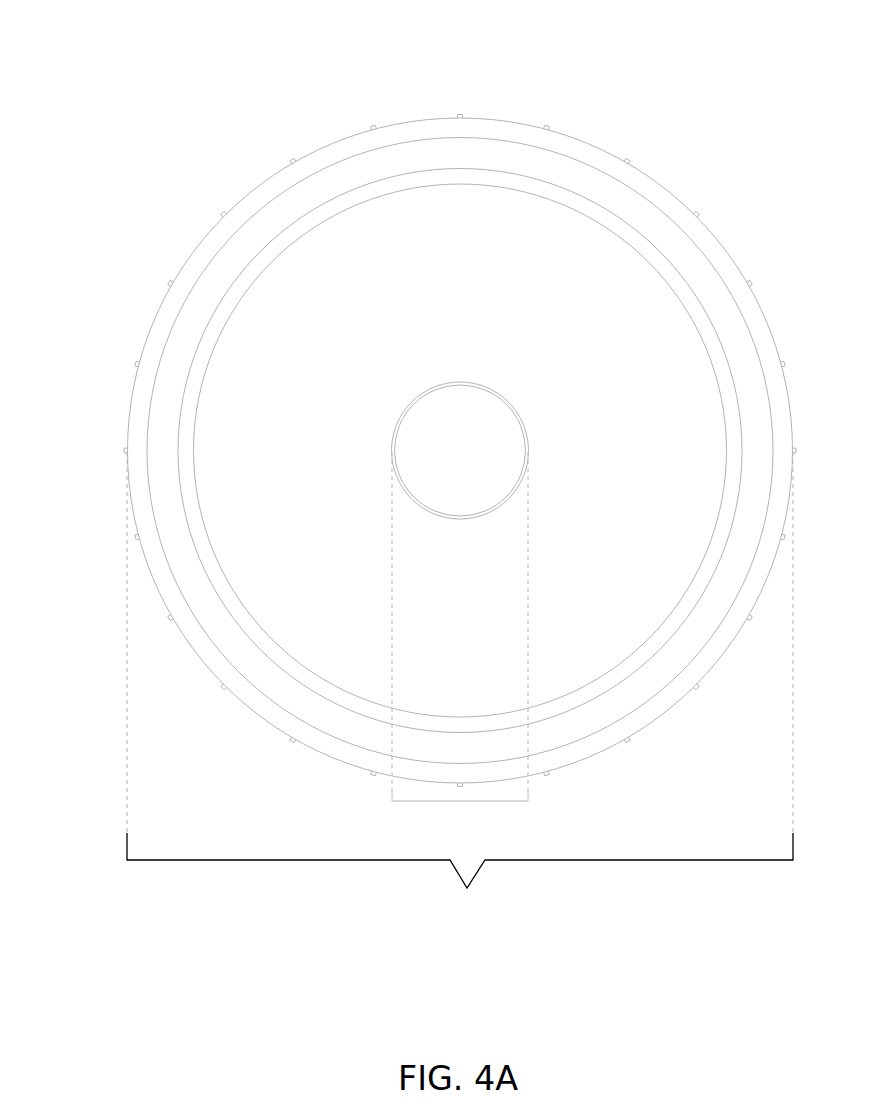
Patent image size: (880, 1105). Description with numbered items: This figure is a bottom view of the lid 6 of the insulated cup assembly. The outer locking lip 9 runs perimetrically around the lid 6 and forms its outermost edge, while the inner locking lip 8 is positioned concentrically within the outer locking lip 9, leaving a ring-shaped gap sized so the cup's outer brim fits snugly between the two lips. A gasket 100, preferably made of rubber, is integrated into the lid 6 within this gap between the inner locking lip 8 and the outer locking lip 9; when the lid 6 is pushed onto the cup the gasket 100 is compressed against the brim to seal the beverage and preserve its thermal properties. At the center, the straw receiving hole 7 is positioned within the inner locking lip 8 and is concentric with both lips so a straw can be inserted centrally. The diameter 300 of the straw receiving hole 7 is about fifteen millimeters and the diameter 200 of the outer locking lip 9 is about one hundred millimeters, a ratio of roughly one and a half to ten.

The lid 6 is at (453, 399).
The outer locking lip 9 is at (166, 318).
The gasket 100 is at (705, 280).
The inner locking lip 8 is at (242, 597).
The straw receiving hole 7 is at (498, 450).
The diameter of the straw receiving hole 300 is at (460, 801).
The diameter of the outer locking lip 200 is at (463, 883).